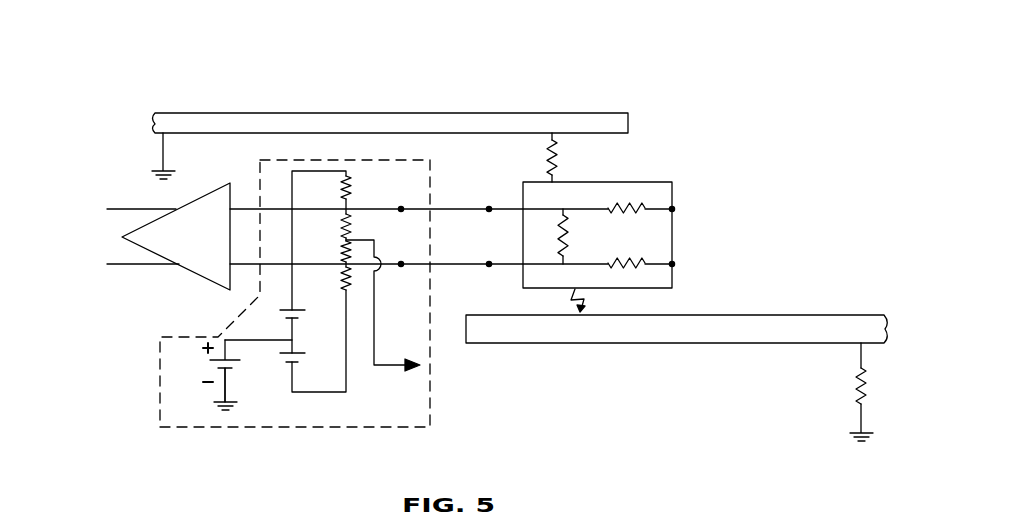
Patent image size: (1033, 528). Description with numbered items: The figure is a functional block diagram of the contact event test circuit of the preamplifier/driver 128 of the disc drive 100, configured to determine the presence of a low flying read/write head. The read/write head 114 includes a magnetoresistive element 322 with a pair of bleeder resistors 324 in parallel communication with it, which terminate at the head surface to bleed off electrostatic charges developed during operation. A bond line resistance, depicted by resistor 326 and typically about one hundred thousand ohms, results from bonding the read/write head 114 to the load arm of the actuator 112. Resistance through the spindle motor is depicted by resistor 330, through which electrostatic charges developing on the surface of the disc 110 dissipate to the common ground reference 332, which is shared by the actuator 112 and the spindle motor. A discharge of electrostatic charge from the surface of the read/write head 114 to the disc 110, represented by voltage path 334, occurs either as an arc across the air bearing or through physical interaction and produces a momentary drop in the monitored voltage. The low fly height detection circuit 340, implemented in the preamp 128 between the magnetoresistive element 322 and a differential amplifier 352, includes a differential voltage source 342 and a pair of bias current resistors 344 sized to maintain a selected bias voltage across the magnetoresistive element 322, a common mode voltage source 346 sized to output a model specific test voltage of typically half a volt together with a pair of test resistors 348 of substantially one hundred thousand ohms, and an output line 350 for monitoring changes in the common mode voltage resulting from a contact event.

The disc drive 100 is at (341, 58).
The disc 110 is at (716, 315).
The actuator 112 is at (481, 96).
The read/write head 114 is at (665, 182).
The preamplifier/driver 128 is at (102, 186).
The magnetoresistive element 322 is at (557, 240).
The bleeder resistors 324 is at (623, 258).
The bond line resistance resistor 326 is at (557, 153).
The spindle motor resistance resistor 330 is at (857, 372).
The common ground reference 332 is at (165, 169).
The voltage path 334 is at (553, 306).
The low fly height detection circuit 340 is at (150, 377).
The differential voltage source 342 is at (293, 322).
The bias current resistors 344 is at (339, 279).
The common mode voltage source 346 is at (235, 380).
The test resistors 348 is at (350, 226).
The output line 350 is at (388, 368).
The differential amplifier 352 is at (185, 272).